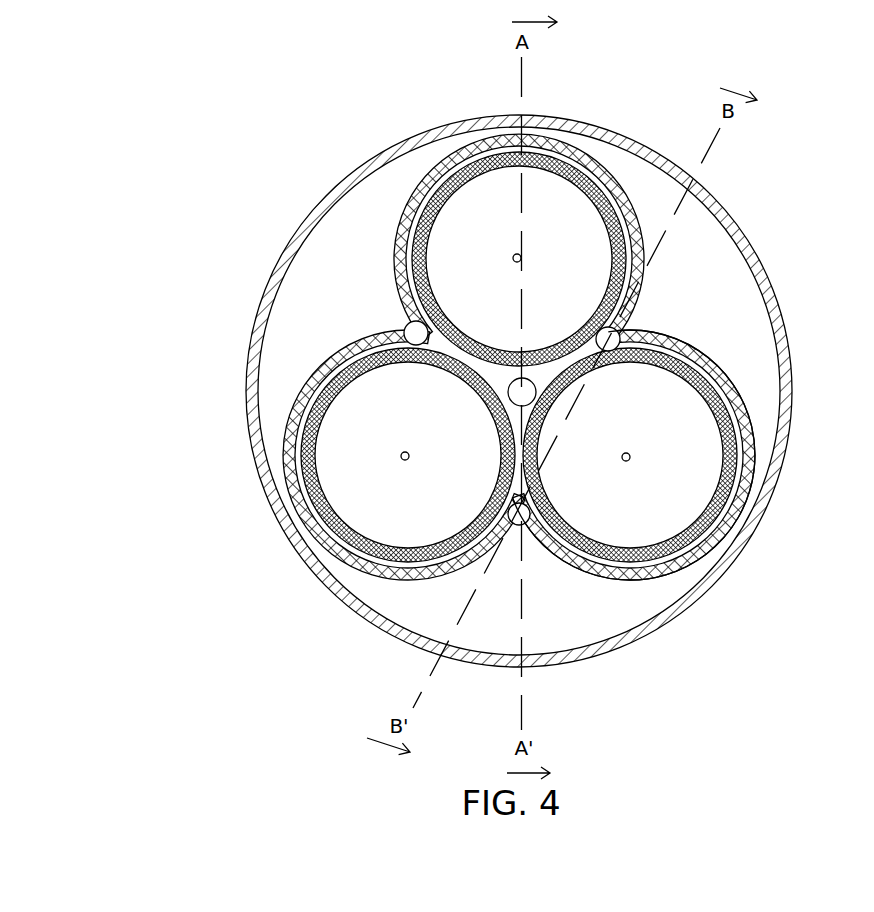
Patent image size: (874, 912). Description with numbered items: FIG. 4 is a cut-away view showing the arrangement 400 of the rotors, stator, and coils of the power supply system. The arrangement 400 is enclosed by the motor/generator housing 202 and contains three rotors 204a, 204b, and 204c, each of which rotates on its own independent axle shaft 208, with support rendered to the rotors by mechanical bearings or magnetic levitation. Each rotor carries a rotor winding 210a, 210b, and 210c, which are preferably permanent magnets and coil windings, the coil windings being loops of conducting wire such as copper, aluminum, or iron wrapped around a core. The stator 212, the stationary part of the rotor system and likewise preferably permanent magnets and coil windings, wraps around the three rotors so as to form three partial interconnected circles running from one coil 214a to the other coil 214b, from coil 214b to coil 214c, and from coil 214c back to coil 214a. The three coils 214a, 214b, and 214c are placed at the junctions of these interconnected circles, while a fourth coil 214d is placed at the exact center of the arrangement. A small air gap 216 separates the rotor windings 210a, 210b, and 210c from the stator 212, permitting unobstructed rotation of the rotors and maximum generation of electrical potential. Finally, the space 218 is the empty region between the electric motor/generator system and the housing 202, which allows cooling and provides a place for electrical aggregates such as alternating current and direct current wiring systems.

The motor/generator housing 202 is at (563, 118).
The rotor 204a is at (480, 190).
The rotor 204b is at (630, 533).
The rotor 204c is at (383, 513).
The axle shaft 208 is at (413, 232).
The rotor winding 210a is at (513, 257).
The rotor winding 210b is at (630, 456).
The rotor winding 210c is at (317, 447).
The stator 212 is at (423, 173).
The coil 214a is at (405, 325).
The coil 214b is at (640, 290).
The coil 214c is at (522, 525).
The coil 214d is at (508, 386).
The gap 216 is at (687, 343).
The space 218 is at (728, 295).
The arrangement 400 is at (455, 379).